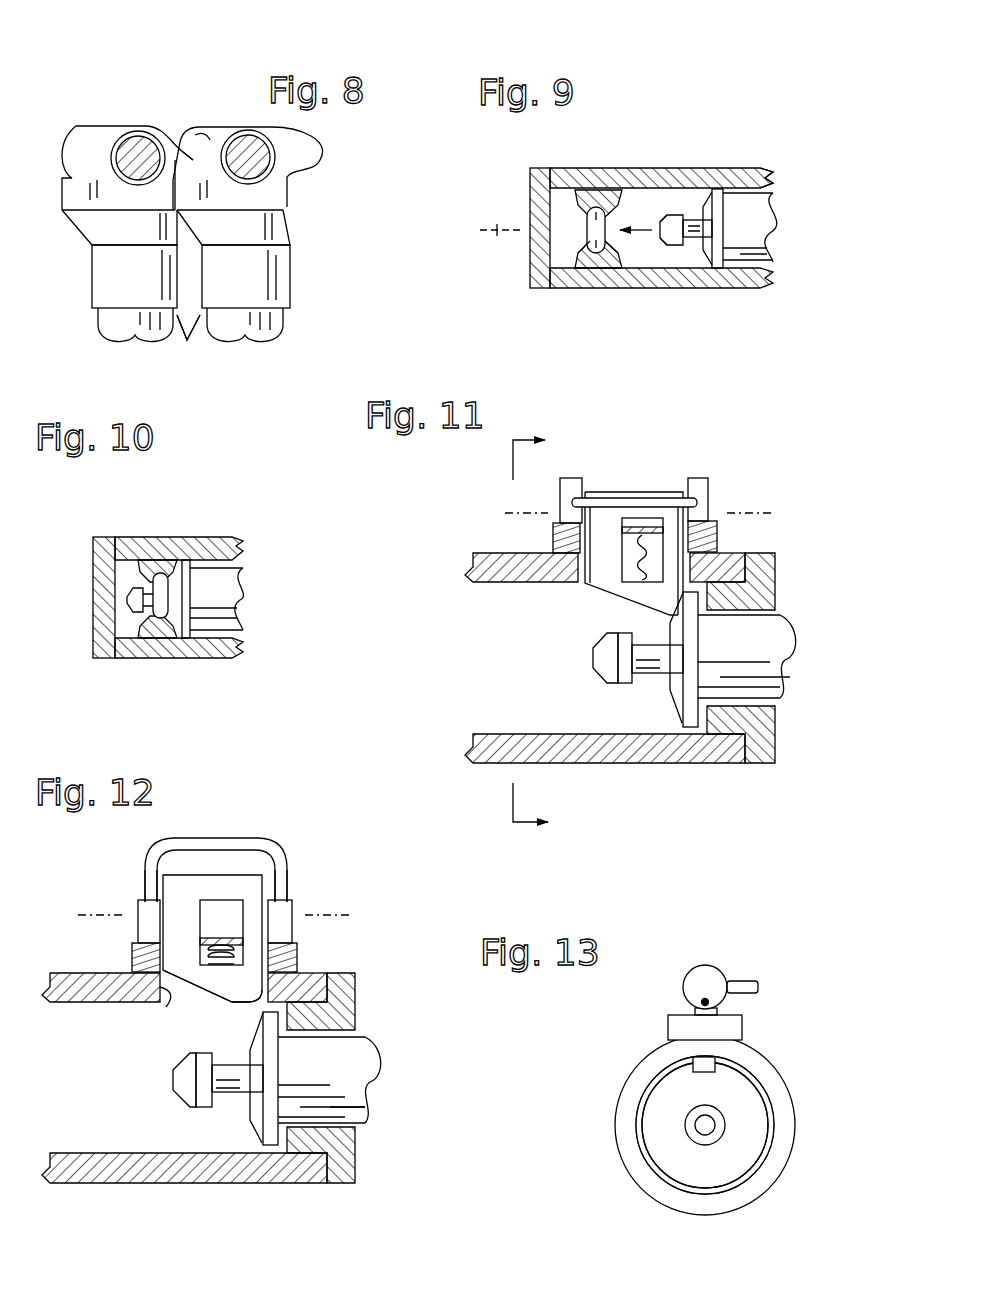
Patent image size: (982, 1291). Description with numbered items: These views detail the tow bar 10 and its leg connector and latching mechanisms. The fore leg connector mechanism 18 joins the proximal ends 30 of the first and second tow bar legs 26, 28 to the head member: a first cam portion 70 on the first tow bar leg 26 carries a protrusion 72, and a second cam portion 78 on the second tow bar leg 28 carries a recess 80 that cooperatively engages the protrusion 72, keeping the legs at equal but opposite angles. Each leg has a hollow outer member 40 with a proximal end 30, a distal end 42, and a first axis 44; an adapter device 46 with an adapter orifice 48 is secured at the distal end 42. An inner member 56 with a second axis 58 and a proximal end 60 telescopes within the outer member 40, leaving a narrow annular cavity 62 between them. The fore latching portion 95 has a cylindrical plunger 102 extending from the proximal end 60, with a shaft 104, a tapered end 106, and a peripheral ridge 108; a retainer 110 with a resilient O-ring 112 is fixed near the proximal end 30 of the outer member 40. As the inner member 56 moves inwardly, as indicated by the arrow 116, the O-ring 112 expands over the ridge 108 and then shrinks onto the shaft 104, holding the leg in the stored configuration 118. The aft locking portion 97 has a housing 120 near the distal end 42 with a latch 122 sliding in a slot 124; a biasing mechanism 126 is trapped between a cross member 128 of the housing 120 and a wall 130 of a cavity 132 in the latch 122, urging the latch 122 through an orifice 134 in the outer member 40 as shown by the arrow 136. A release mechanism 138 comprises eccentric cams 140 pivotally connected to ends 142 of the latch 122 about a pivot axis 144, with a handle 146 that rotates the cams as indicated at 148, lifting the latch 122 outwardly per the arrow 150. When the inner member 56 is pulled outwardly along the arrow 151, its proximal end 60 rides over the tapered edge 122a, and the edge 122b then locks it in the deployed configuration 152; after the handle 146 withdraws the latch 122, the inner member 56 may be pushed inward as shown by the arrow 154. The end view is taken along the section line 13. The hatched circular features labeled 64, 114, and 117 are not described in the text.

In FIG. 8, the tow bar 10 is at (318, 267).
In FIG. 9, the tow bar 10 is at (745, 112).
In FIG. 10, the tow bar 10 is at (262, 527).
In FIG. 11, the tow bar 10 is at (638, 437).
In FIG. 12, the tow bar 10 is at (343, 832).
In FIG. 13, the tow bar 10 is at (792, 902).
In FIG. 11, the section line 13 is at (538, 613).
In FIG. 8, the fore leg connector mechanism 18 is at (83, 103).
In FIG. 8, the first tow bar leg 26 is at (98, 322).
In FIG. 8, the second tow bar leg 28 is at (283, 326).
In FIG. 8, the proximal end 30 is at (190, 343).
In FIG. 9, the proximal end 30 is at (556, 180).
In FIG. 10, the proximal end 30 is at (228, 650).
In FIG. 13, the proximal end 30 is at (633, 1150).
In FIG. 9, the hollow outer member 40 is at (760, 173).
In FIG. 11, the distal end 42 is at (745, 566).
In FIG. 12, the distal end 42 is at (340, 981).
In FIG. 9, the first axis 44 is at (487, 254).
In FIG. 11, the adapter device 46 is at (762, 601).
In FIG. 12, the adapter device 46 is at (343, 1022).
In FIG. 12, the adapter orifice 48 is at (357, 1110).
In FIG. 9, the inner member 56 is at (772, 237).
In FIG. 10, the inner member 56 is at (238, 611).
In FIG. 11, the inner member 56 is at (780, 670).
In FIG. 12, the inner member 56 is at (367, 1086).
In FIG. 9, the second axis 58 is at (504, 230).
In FIG. 9, the proximal end 60 is at (708, 262).
In FIG. 11, the proximal end 60 is at (690, 716).
In FIG. 12, the proximal end 60 is at (270, 1140).
In FIG. 13, the proximal end 60 is at (745, 1158).
In FIG. 9, the annular cavity 62 is at (778, 260).
In FIG. 8, the bore 64 is at (135, 147).
In FIG. 8, the first cam portion 70 is at (87, 231).
In FIG. 8, the protrusion 72 is at (195, 157).
In FIG. 8, the second cam portion 78 is at (287, 233).
In FIG. 8, the recess 80 is at (203, 142).
In FIG. 9, the fore latching portion 95 is at (800, 125).
In FIG. 10, the fore latching portion 95 is at (211, 520).
In FIG. 11, the aft locking portion 97 is at (748, 430).
In FIG. 9, the plunger 102 is at (697, 214).
In FIG. 13, the plunger 102 is at (706, 1125).
In FIG. 9, the shaft 104 is at (701, 247).
In FIG. 9, the tapered end 106 is at (672, 216).
In FIG. 10, the tapered end 106 is at (130, 605).
In FIG. 9, the peripheral ridge 108 is at (694, 237).
In FIG. 9, the retainer 110 is at (634, 117).
In FIG. 9, the O-ring 112 is at (593, 225).
In FIG. 10, the O-ring 112 is at (158, 595).
In FIG. 9, the retainer 114 is at (578, 252).
In FIG. 10, the retainer 114 is at (145, 622).
In FIG. 9, the arrow 116 is at (648, 228).
In FIG. 9, the wedge 117 is at (623, 190).
In FIG. 10, the stored configuration 118 is at (97, 530).
In FIG. 11, the housing 120 is at (558, 546).
In FIG. 12, the housing 120 is at (133, 964).
In FIG. 13, the housing 120 is at (742, 1027).
In FIG. 11, the latch 122 is at (610, 589).
In FIG. 12, the latch 122 is at (198, 878).
In FIG. 13, the latch 122 is at (690, 1062).
In FIG. 12, the tapered edge 122a is at (197, 986).
In FIG. 12, the edge 122b is at (230, 993).
In FIG. 11, the slot 124 is at (712, 541).
In FIG. 11, the biasing mechanism 126 is at (558, 627).
In FIG. 11, the cross member 128 is at (645, 513).
In FIG. 12, the cross member 128 is at (210, 934).
In FIG. 11, the wall 130 is at (641, 535).
In FIG. 12, the wall 130 is at (218, 1080).
In FIG. 11, the cavity 132 is at (627, 557).
In FIG. 12, the cavity 132 is at (217, 912).
In FIG. 12, the orifice 134 is at (166, 1006).
In FIG. 11, the arrow 136 is at (603, 563).
In FIG. 11, the release mechanism 138 is at (748, 458).
In FIG. 11, the eccentric cams 140 is at (576, 480).
In FIG. 12, the eccentric cams 140 is at (145, 900).
In FIG. 13, the eccentric cams 140 is at (690, 980).
In FIG. 12, the ends 142 is at (150, 867).
In FIG. 11, the pivot axis 144 is at (500, 512).
In FIG. 12, the pivot axis 144 is at (76, 912).
In FIG. 13, the pivot axis 144 is at (700, 1002).
In FIG. 11, the handle 146 is at (676, 500).
In FIG. 12, the handle 146 is at (267, 845).
In FIG. 13, the handle 146 is at (759, 987).
In FIG. 13, the rotation indicator 148 is at (735, 931).
In FIG. 13, the arrow 150 is at (703, 908).
In FIG. 11, the arrow 151 is at (505, 668).
In FIG. 11, the deployed configuration 152 is at (470, 530).
In FIG. 13, the deployed configuration 152 is at (595, 1013).
In FIG. 12, the arrow 154 is at (72, 1077).